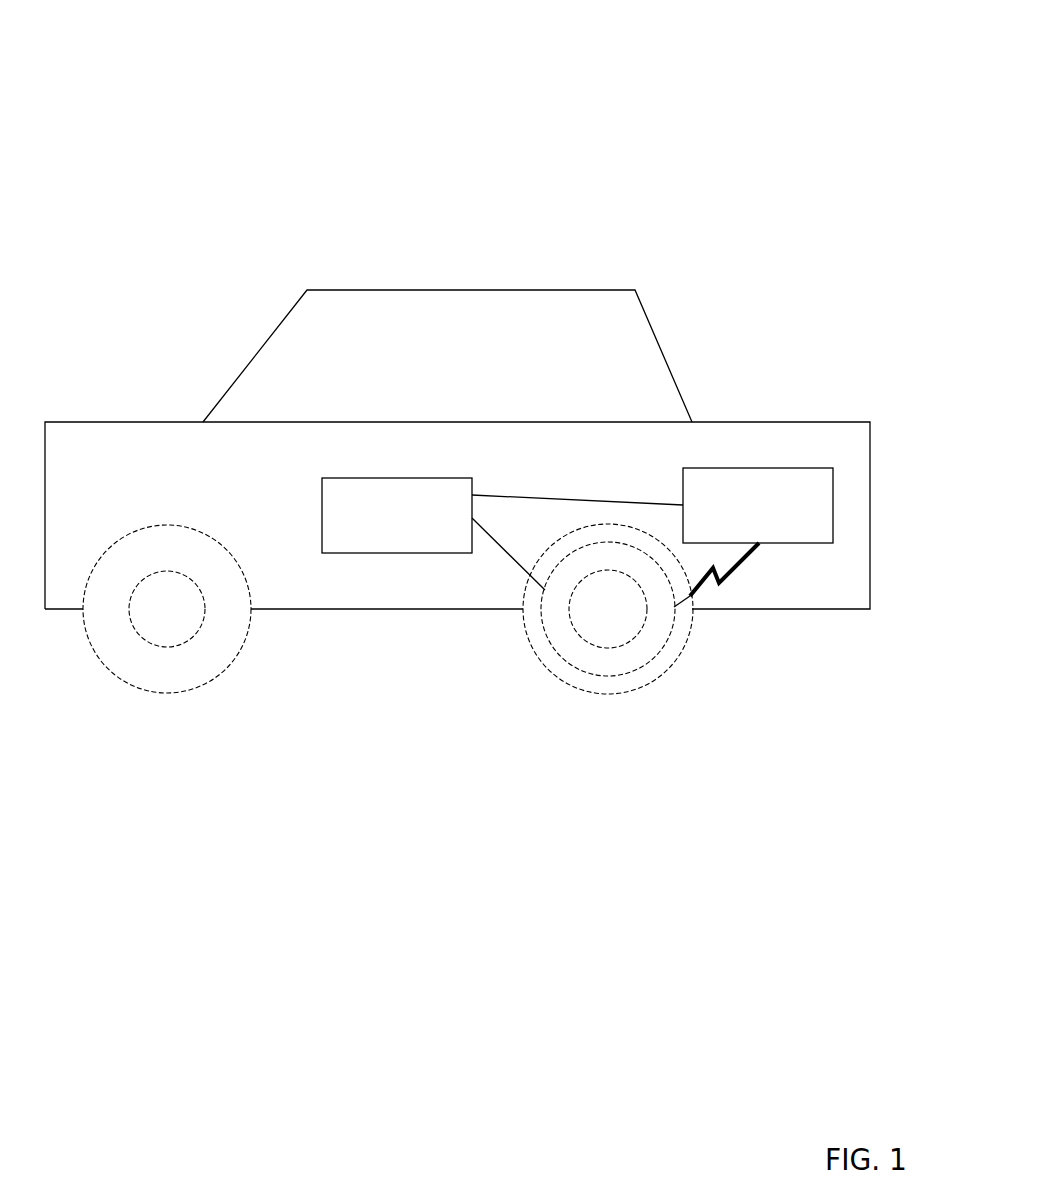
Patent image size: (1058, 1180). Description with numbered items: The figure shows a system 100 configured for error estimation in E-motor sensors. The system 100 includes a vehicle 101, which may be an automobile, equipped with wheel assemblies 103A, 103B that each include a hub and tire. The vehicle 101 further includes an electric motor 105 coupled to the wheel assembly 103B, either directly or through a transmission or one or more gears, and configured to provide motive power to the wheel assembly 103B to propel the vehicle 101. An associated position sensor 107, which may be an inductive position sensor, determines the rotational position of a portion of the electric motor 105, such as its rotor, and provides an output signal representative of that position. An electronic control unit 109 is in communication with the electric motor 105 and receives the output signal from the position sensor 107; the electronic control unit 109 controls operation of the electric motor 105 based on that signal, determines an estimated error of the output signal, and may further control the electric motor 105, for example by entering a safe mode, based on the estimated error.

The system 100 is at (752, 38).
The vehicle 101 is at (110, 496).
The wheel assembly 103A is at (165, 693).
The wheel assembly 103B is at (608, 694).
The electric motor 105 is at (653, 657).
The position sensor 107 is at (808, 532).
The electronic control unit (ECU) 109 is at (413, 540).